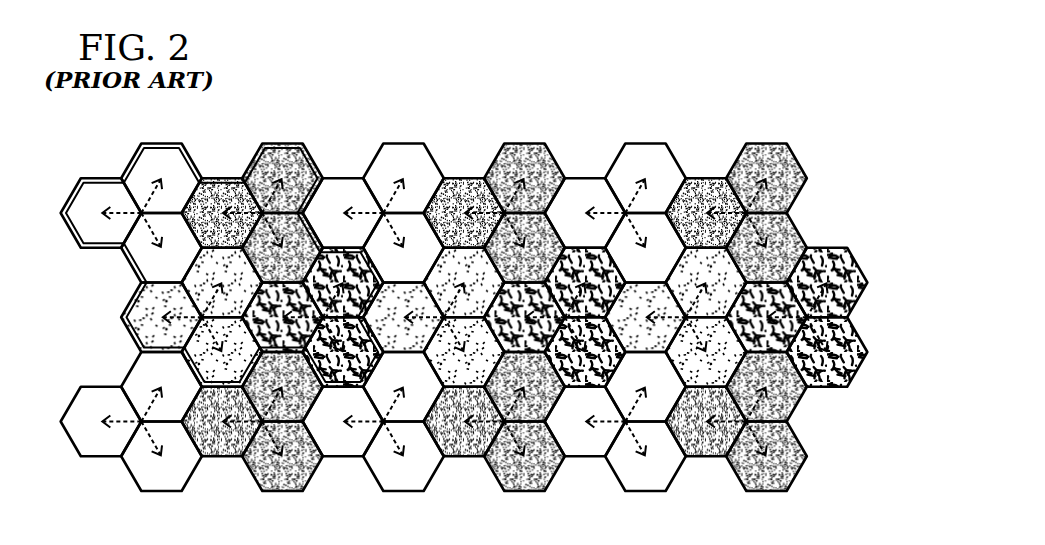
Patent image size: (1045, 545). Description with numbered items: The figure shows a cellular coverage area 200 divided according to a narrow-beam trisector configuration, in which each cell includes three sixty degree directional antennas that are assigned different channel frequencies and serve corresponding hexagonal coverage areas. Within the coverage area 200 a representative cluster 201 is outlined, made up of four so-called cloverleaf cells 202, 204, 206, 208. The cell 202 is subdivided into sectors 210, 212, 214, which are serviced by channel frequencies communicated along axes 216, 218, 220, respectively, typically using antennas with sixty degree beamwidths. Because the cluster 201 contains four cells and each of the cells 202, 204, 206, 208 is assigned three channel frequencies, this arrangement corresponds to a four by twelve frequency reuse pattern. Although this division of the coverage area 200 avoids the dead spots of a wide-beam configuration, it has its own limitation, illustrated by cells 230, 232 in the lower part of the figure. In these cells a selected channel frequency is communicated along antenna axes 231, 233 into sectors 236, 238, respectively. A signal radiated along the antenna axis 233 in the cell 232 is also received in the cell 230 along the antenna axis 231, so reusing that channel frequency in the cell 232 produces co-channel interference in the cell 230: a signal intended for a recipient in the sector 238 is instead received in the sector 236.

The cellular coverage area 200 is at (452, 310).
The cluster 201 is at (304, 144).
The cloverleaf cell 202 is at (138, 161).
The cloverleaf cell 204 is at (291, 142).
The cloverleaf cell 206 is at (129, 338).
The cloverleaf cell 208 is at (374, 252).
The sector 210 is at (172, 137).
The sector 212 is at (93, 227).
The sector 214 is at (140, 255).
The axis 216 is at (153, 193).
The axis 218 is at (122, 205).
The axis 220 is at (160, 232).
The cell 230 is at (397, 492).
The antenna axis 231 is at (363, 430).
The cell 232 is at (636, 494).
The antenna axis 233 is at (620, 426).
The sector 236 is at (357, 428).
The sector 238 is at (593, 428).